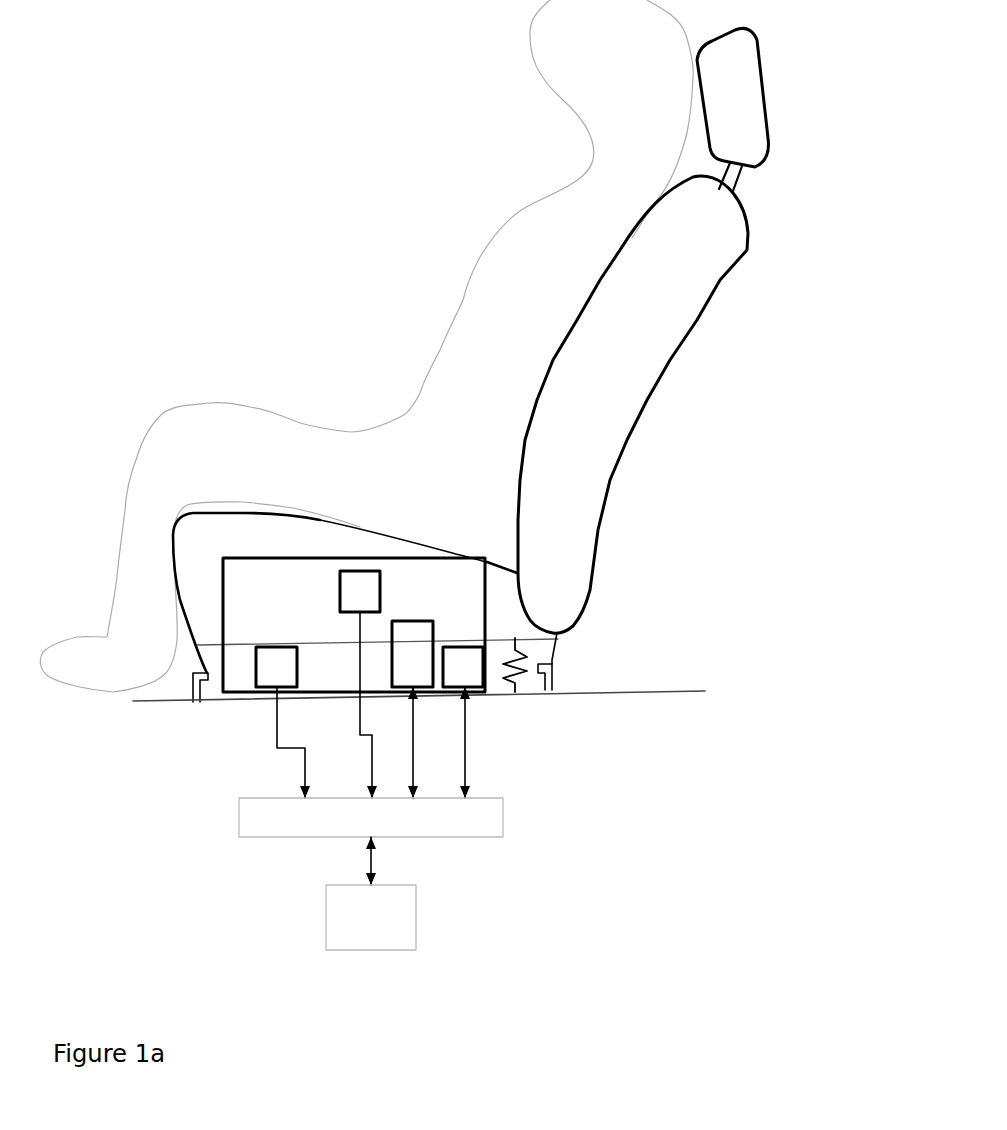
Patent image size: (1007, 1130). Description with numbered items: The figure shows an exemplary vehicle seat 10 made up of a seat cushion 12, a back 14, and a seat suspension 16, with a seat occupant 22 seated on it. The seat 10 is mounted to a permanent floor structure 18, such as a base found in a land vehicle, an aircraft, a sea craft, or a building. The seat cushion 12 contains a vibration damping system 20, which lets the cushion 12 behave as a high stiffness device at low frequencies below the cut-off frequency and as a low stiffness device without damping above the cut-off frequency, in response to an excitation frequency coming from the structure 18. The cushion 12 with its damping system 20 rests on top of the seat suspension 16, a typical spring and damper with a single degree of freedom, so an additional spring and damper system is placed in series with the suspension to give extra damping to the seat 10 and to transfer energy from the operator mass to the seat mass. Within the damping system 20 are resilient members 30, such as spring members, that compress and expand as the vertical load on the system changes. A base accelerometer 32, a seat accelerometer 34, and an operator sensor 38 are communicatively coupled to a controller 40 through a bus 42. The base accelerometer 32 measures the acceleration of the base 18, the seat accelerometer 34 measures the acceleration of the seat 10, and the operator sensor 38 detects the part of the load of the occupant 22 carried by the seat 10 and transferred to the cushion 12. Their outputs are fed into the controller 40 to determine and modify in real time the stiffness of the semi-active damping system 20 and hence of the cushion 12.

The seat 10 is at (720, 387).
The seat cushion 12 is at (220, 542).
The back 14 is at (610, 415).
The seat suspension 16 is at (525, 670).
The permanent floor structure 18 is at (672, 692).
The vibration damping system 20 is at (307, 557).
The seat occupant 22 is at (492, 312).
The resilient members 30 is at (413, 621).
The base accelerometer 32 is at (463, 663).
The seat accelerometer 34 is at (340, 590).
The operator sensor 38 is at (257, 667).
The controller 40 is at (416, 918).
The bus 42 is at (503, 832).